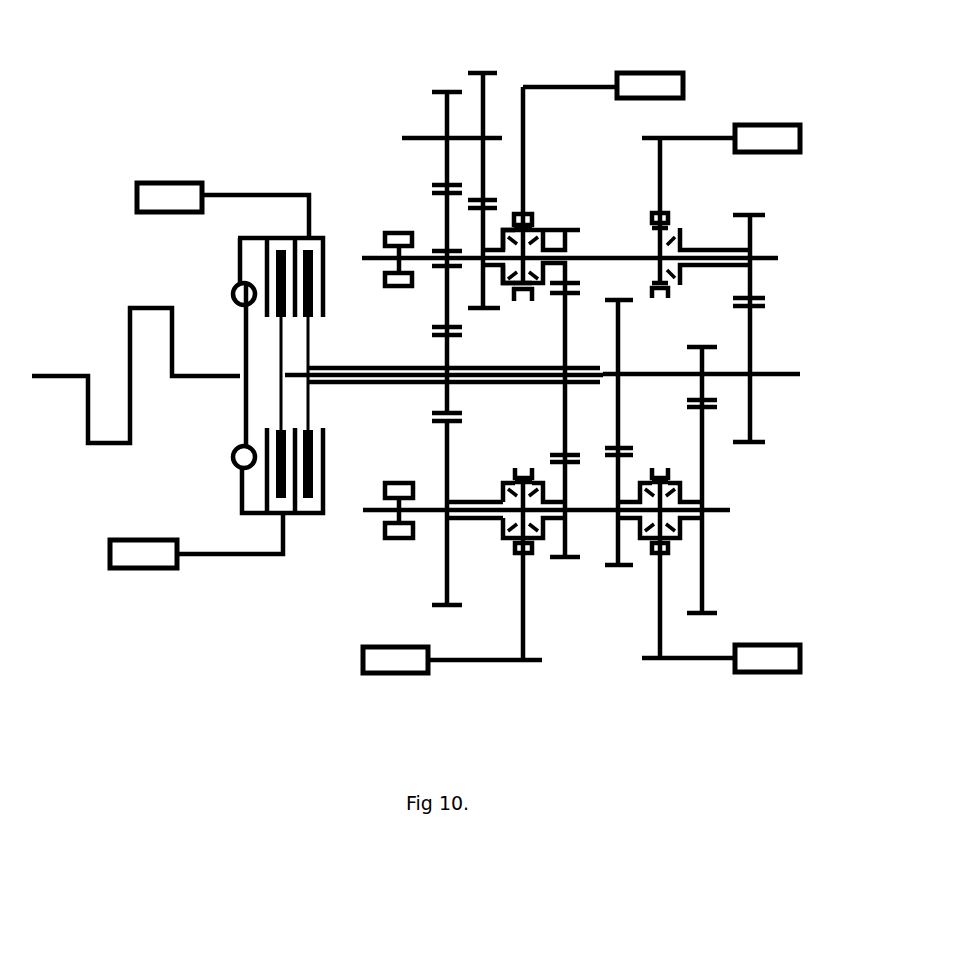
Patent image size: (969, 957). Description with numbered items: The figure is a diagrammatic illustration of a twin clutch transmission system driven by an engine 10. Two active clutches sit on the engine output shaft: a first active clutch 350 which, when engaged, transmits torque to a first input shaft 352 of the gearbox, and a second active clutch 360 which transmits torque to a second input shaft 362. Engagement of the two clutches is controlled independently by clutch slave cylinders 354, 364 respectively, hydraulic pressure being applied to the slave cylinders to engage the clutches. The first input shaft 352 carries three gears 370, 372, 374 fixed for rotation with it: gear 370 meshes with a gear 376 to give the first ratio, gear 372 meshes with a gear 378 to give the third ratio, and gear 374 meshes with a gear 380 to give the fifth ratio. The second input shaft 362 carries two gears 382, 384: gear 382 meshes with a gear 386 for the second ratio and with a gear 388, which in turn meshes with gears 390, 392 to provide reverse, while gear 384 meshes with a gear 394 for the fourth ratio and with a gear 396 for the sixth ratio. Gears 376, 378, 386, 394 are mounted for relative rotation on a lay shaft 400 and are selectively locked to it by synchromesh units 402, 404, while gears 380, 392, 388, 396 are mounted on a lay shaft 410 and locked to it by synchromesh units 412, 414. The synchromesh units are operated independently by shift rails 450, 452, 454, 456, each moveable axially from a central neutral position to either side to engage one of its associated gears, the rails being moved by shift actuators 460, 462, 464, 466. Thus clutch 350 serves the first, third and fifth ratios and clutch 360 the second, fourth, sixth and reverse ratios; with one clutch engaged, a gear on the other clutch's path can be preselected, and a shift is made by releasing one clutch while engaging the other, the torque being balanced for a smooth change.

The engine 10 is at (128, 370).
The first active clutch 350 is at (278, 266).
The first input shaft 352 is at (800, 373).
The clutch slave cylinder 354 is at (113, 560).
The second active clutch 360 is at (310, 515).
The second input shaft 362 is at (400, 384).
The clutch slave cylinder 364 is at (152, 197).
The gear 370 is at (702, 345).
The gear 372 is at (620, 400).
The gear 374 is at (760, 444).
The gear 376 is at (705, 575).
The gear 378 is at (617, 567).
The gear 380 is at (755, 215).
The gear 382 is at (445, 352).
The gear 384 is at (560, 410).
The gear 386 is at (442, 552).
The gear 388 is at (445, 222).
The gear 390 is at (445, 92).
The gear 392 is at (486, 73).
The gear 394 is at (566, 560).
The gear 396 is at (568, 232).
The lay shaft 400 is at (728, 513).
The synchromesh unit 402 is at (660, 525).
The synchromesh unit 404 is at (515, 496).
The lay shaft 410 is at (780, 258).
The synchromesh unit 412 is at (668, 224).
The synchromesh unit 414 is at (530, 215).
The shift rail 450 is at (665, 663).
The shift rail 452 is at (685, 138).
The shift rail 454 is at (505, 664).
The shift rail 456 is at (557, 87).
The shift actuator 460 is at (775, 665).
The shift actuator 462 is at (780, 130).
The shift actuator 464 is at (378, 668).
The shift actuator 466 is at (656, 82).